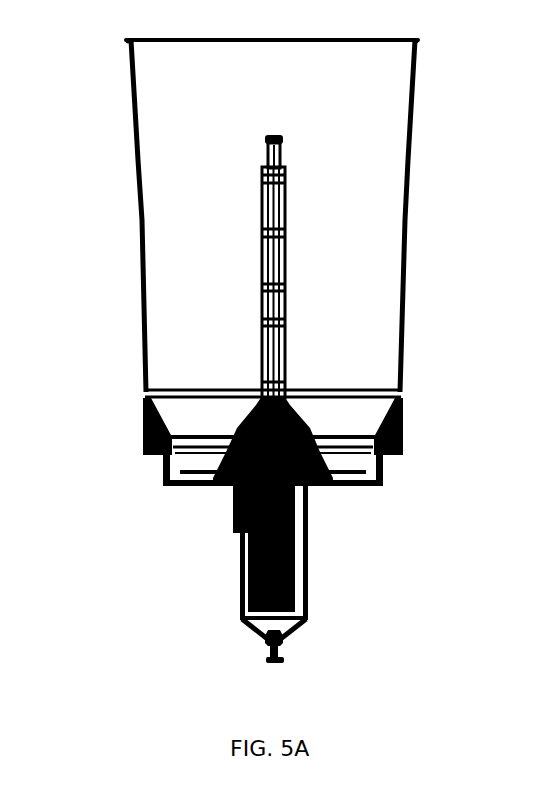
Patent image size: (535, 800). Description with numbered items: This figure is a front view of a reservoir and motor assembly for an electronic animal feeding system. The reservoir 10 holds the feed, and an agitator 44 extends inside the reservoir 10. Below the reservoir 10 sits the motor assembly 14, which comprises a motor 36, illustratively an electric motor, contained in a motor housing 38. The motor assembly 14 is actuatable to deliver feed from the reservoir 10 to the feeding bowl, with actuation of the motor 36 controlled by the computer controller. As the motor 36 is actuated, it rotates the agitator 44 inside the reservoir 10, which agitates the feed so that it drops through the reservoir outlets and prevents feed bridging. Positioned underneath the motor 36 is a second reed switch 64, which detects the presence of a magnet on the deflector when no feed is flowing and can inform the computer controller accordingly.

The reservoir 10 is at (148, 124).
The agitator 44 is at (280, 247).
The motor assembly 14 is at (313, 485).
The motor 36 is at (252, 563).
The motor housing 38 is at (240, 603).
The second reed switch 64 is at (272, 665).